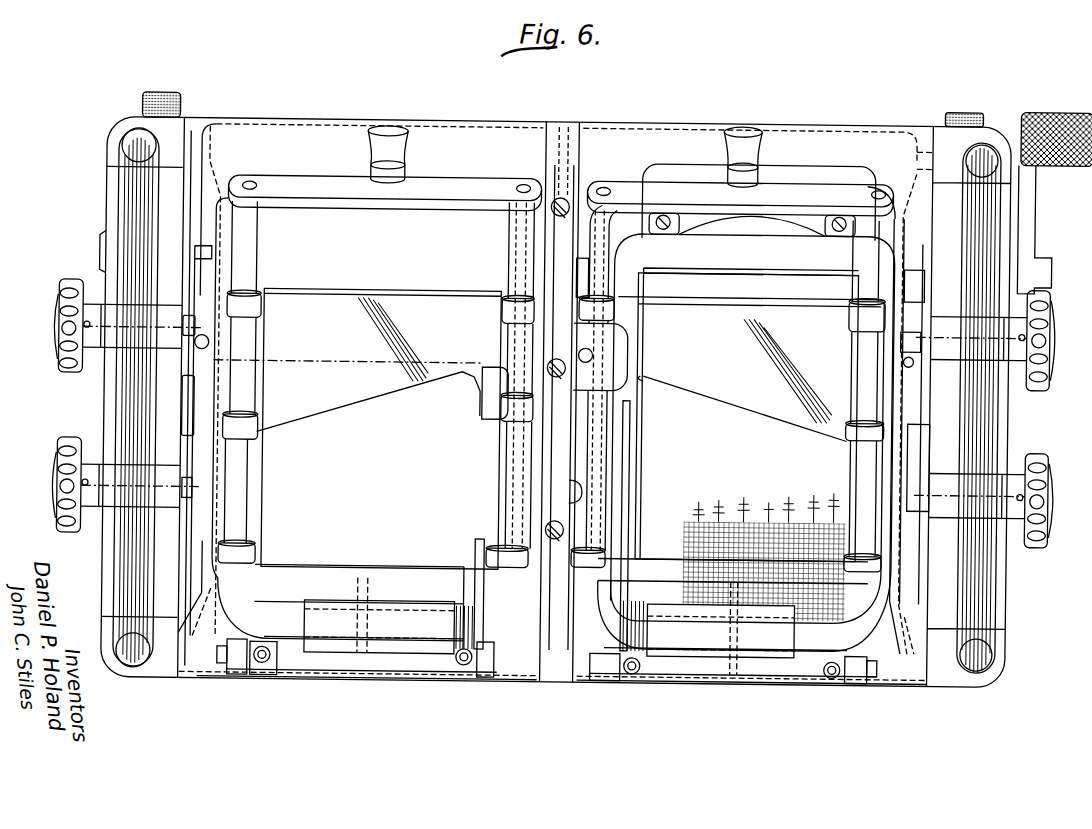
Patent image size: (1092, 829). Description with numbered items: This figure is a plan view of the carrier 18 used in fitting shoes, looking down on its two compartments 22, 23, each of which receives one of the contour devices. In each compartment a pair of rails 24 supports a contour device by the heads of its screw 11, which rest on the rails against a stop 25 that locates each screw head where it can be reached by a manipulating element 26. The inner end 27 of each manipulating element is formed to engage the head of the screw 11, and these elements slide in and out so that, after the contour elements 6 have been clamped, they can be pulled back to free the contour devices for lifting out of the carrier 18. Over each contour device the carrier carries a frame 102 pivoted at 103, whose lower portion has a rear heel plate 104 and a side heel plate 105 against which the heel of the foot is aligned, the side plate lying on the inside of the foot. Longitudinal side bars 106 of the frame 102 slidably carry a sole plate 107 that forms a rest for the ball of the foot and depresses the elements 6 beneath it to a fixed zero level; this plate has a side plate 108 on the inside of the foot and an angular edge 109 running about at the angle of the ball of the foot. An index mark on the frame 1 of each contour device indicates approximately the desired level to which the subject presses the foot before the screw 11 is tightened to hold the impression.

The frame 1 is at (657, 172).
The contour elements 6 is at (727, 520).
The screw 11 is at (912, 333).
The carrier 18 is at (172, 673).
The compartment 22 is at (893, 598).
The compartment 23 is at (213, 408).
The rails 24 is at (200, 290).
The stop 25 is at (208, 353).
The manipulating element 26 is at (57, 310).
The inner end 27 is at (205, 336).
The frame 102 is at (617, 188).
The pivot 103 is at (592, 662).
The rear heel plate 104 is at (392, 623).
The side heel plate 105 is at (477, 570).
The longitudinal side bars 106 is at (252, 243).
The sole plate 107 is at (388, 386).
The side plate 108 is at (473, 407).
The angular edge 109 is at (307, 423).